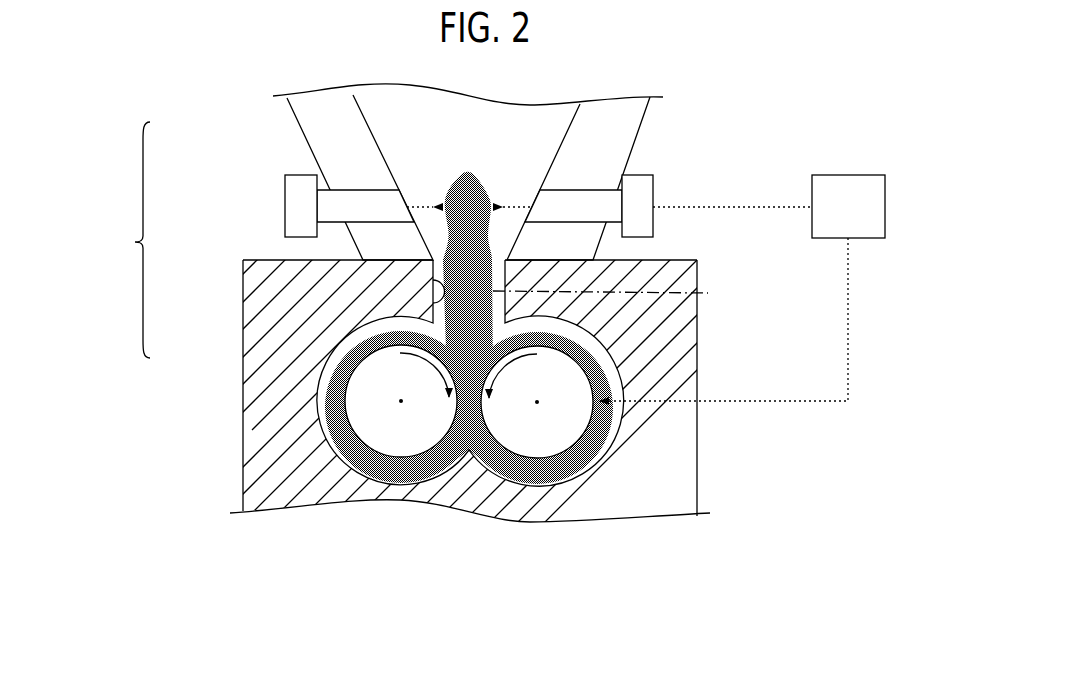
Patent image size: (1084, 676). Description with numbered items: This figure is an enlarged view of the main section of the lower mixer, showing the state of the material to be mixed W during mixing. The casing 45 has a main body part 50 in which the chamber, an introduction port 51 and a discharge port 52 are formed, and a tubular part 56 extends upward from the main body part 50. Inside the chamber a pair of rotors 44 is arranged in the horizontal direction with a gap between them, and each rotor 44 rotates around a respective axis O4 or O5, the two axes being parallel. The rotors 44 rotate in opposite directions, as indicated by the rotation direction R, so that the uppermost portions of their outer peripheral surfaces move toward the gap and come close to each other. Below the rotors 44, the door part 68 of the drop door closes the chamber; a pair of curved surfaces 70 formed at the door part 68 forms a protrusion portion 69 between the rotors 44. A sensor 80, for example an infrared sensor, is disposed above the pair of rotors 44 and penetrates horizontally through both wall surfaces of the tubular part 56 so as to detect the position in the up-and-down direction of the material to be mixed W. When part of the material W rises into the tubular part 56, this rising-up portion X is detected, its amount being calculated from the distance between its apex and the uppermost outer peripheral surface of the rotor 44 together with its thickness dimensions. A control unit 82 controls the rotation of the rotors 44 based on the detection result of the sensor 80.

The rotor 44 is at (400, 448).
The casing 45 is at (125, 240).
The main body part 50 is at (243, 349).
The introduction port 51 is at (437, 301).
The discharge port 52 is at (410, 488).
The tubular part 56 is at (312, 135).
The door part 68 is at (468, 507).
The protrusion portion 69 is at (468, 460).
The curved surface 70 is at (535, 477).
The sensor 80 is at (283, 205).
The control unit 82 is at (848, 176).
The rotation direction R is at (433, 365).
The rising-up portion X is at (611, 293).
The axis O4 is at (401, 401).
The axis O5 is at (537, 402).
The material to be mixed W is at (497, 470).